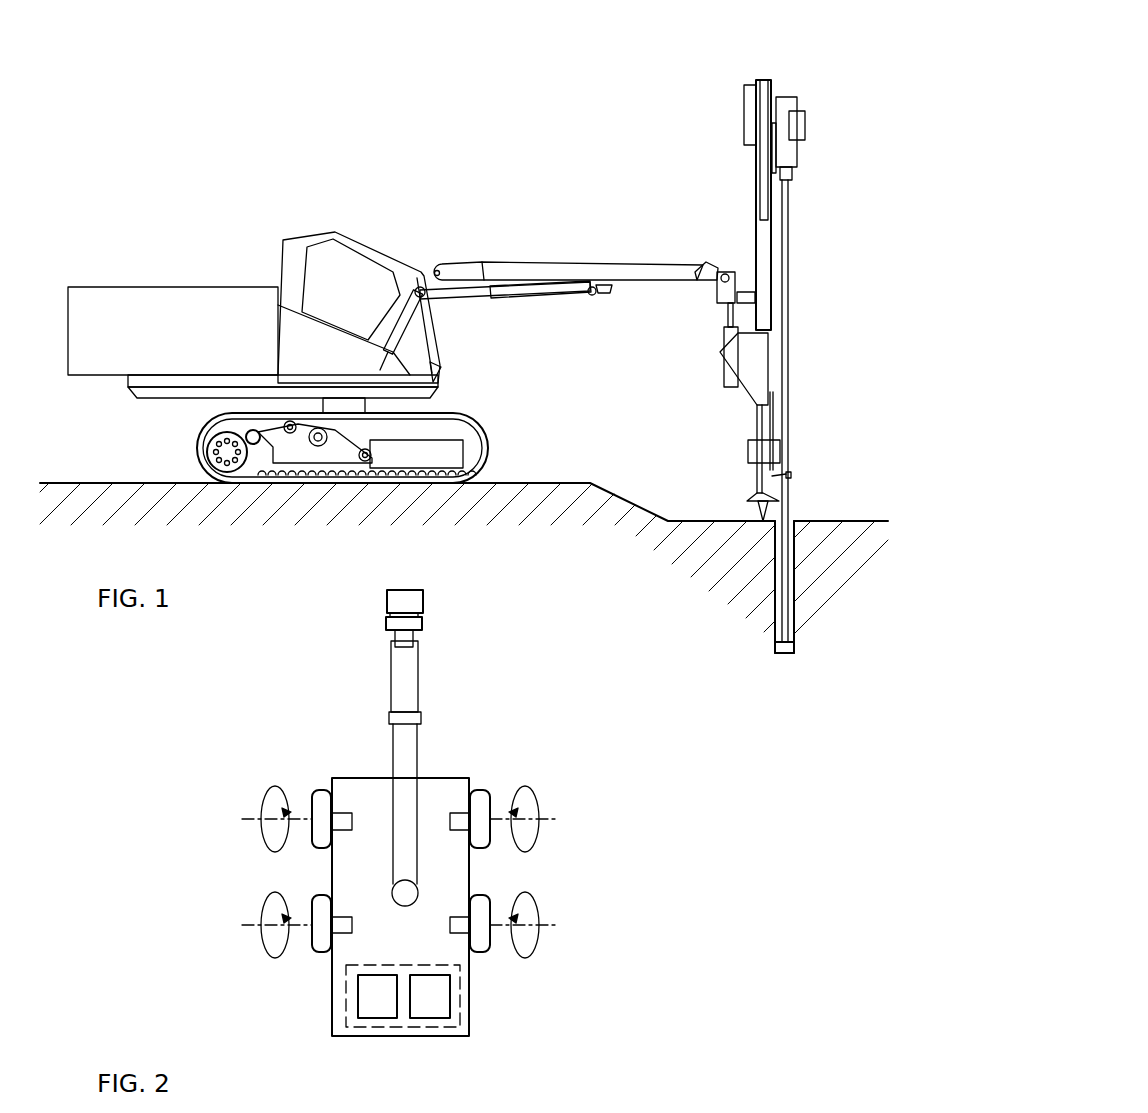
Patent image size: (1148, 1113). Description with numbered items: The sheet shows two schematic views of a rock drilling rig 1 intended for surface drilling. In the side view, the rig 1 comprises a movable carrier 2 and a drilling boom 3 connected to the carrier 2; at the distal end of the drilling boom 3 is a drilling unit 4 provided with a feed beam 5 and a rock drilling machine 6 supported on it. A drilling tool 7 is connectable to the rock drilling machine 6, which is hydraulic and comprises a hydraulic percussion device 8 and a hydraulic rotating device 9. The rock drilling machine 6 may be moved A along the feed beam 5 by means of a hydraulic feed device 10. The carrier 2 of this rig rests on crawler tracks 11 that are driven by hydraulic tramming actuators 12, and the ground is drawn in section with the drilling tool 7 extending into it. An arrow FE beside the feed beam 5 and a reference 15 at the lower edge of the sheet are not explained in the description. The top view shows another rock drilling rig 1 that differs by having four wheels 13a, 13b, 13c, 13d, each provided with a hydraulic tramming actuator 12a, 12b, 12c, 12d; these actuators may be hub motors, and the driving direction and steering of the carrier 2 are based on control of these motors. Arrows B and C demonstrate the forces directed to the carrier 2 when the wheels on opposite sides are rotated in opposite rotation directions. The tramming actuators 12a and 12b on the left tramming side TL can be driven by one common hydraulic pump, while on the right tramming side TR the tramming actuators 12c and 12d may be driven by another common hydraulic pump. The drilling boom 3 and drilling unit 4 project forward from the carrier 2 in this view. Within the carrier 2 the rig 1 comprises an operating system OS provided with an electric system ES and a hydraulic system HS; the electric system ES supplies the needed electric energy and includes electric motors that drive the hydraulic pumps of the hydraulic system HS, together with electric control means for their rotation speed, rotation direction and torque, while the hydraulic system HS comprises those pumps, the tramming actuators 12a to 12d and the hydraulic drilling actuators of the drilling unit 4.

In FIG. 1, the rock drilling rig 1 is at (242, 175).
In FIG. 2, the rock drilling rig 1 is at (318, 658).
In FIG. 1, the carrier 2 is at (180, 248).
In FIG. 2, the carrier 2 is at (350, 743).
In FIG. 1, the drilling boom 3 is at (543, 273).
In FIG. 2, the drilling boom 3 is at (438, 700).
In FIG. 1, the drilling unit 4 is at (848, 125).
In FIG. 2, the drilling unit 4 is at (448, 600).
In FIG. 1, the feed beam 5 is at (760, 180).
In FIG. 1, the rock drilling machine 6 is at (789, 145).
In FIG. 1, the drilling tool 7 is at (845, 433).
In FIG. 1, the hydraulic percussion device 8 is at (784, 96).
In FIG. 1, the hydraulic rotating device 9 is at (803, 127).
In FIG. 1, the hydraulic feed device 10 is at (744, 112).
In FIG. 1, the crawler tracks 11 is at (433, 413).
In FIG. 1, the hydraulic tramming actuators 12 is at (248, 432).
In FIG. 2, the hydraulic tramming actuator 12a is at (343, 820).
In FIG. 2, the hydraulic tramming actuator 12b is at (342, 933).
In FIG. 2, the hydraulic tramming actuator 12c is at (460, 820).
In FIG. 2, the hydraulic tramming actuator 12d is at (460, 922).
In FIG. 2, the wheel 13a is at (321, 803).
In FIG. 2, the wheel 13b is at (323, 943).
In FIG. 2, the wheel 13c is at (483, 803).
In FIG. 2, the wheel 13d is at (483, 943).
In FIG. 2, the reference 15 is at (634, 1104).
In FIG. 1, the feed direction FE is at (812, 198).
In FIG. 1, the movement of the rock drilling machine A is at (833, 320).
In FIG. 2, the left tramming side TL is at (215, 790).
In FIG. 2, the right tramming side TR is at (568, 775).
In FIG. 2, the force arrow B is at (245, 852).
In FIG. 2, the force arrow C is at (568, 848).
In FIG. 2, the operating system OS is at (460, 977).
In FIG. 2, the electric system ES is at (388, 1008).
In FIG. 2, the hydraulic system HS is at (432, 1010).